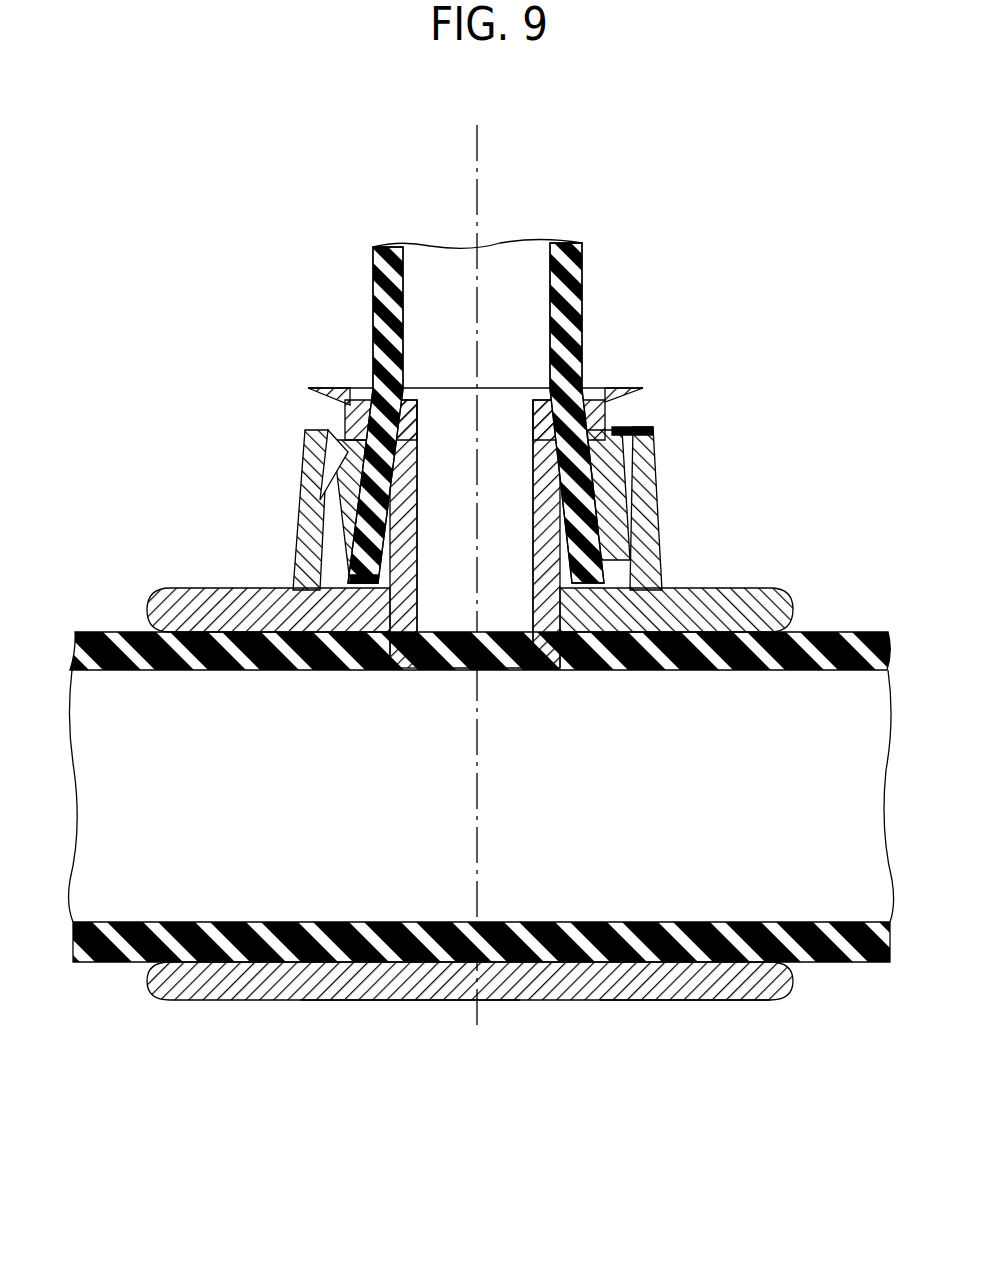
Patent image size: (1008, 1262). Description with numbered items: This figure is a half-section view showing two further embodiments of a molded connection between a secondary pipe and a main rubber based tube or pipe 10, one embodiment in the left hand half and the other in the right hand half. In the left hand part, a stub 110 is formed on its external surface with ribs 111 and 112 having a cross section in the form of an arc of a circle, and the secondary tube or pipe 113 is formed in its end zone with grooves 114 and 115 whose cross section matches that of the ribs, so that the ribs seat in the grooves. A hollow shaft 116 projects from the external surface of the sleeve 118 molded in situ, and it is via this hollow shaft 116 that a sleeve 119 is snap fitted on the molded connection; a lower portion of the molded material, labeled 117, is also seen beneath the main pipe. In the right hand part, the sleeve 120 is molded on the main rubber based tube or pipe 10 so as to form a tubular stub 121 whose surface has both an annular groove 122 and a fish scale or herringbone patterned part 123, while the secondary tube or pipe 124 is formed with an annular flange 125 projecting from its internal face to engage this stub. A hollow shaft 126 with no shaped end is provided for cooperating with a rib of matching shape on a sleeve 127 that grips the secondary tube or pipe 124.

The main rubber based tube or pipe 10 is at (98, 633).
The stub 110 is at (417, 612).
The rib 111 is at (348, 452).
The rib 112 is at (338, 518).
The secondary tube or pipe 113 is at (383, 250).
The groove 114 is at (392, 445).
The groove 115 is at (370, 527).
The hollow shaft 116 is at (303, 462).
The bottom plate 117 is at (285, 1000).
The sleeve molded in situ 118 is at (397, 985).
The sleeve 119 is at (357, 389).
The sleeve 120 is at (650, 985).
The tubular stub 121 is at (660, 542).
The annular groove 122 is at (540, 440).
The fish scale or herringbone patterned part 123 is at (620, 500).
The secondary tube or pipe 124 is at (590, 270).
The annular flange 125 is at (633, 428).
The hollow shaft 126 is at (662, 560).
The sleeve 127 is at (602, 372).